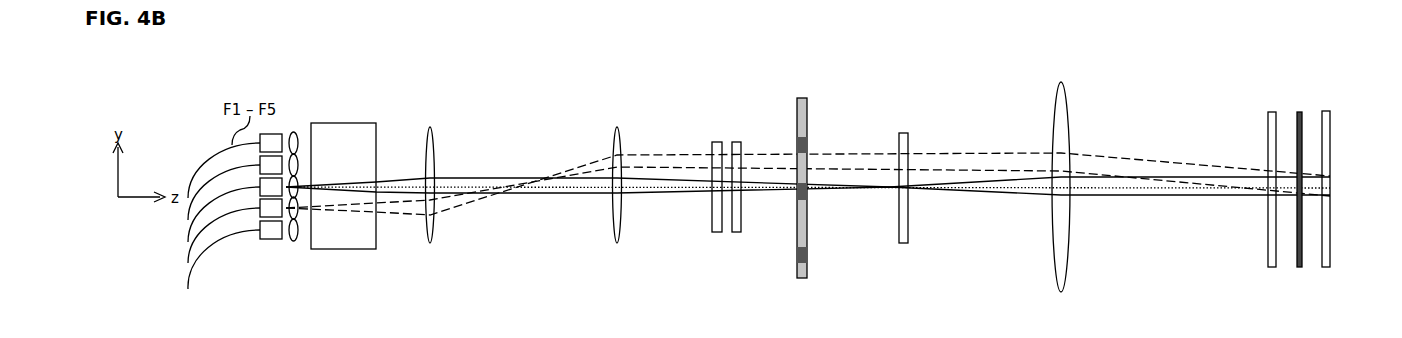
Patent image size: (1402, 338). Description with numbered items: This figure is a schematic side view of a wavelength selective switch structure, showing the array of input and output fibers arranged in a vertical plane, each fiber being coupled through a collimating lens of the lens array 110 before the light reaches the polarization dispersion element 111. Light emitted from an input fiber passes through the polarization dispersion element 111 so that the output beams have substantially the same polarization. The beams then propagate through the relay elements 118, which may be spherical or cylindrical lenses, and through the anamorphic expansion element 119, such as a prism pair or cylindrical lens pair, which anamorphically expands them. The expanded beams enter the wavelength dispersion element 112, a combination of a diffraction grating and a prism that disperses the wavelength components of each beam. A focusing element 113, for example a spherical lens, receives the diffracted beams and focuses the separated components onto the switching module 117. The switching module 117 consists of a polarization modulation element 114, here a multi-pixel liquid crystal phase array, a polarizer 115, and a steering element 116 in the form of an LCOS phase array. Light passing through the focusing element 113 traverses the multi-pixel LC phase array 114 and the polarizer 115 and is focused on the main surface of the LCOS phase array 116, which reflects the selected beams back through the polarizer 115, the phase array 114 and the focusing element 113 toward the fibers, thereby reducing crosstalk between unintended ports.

The collimating lens array (110F1-110F5) 110 is at (294, 122).
The polarization dispersion element 111 is at (343, 123).
The wavelength dispersion element 112 is at (900, 82).
The focusing element 113 is at (1062, 80).
The polarization modulation element 114 is at (1272, 110).
The polarizer 115 is at (1300, 111).
The steering element 116 is at (1332, 113).
The switching module 117 is at (1255, 67).
The relay element 118 is at (610, 102).
The anamorphic expansion element 119 is at (735, 142).